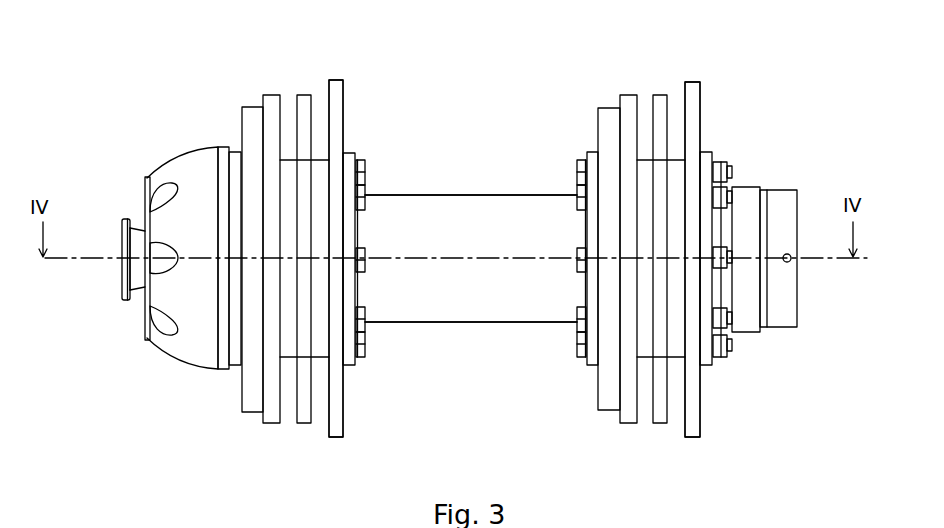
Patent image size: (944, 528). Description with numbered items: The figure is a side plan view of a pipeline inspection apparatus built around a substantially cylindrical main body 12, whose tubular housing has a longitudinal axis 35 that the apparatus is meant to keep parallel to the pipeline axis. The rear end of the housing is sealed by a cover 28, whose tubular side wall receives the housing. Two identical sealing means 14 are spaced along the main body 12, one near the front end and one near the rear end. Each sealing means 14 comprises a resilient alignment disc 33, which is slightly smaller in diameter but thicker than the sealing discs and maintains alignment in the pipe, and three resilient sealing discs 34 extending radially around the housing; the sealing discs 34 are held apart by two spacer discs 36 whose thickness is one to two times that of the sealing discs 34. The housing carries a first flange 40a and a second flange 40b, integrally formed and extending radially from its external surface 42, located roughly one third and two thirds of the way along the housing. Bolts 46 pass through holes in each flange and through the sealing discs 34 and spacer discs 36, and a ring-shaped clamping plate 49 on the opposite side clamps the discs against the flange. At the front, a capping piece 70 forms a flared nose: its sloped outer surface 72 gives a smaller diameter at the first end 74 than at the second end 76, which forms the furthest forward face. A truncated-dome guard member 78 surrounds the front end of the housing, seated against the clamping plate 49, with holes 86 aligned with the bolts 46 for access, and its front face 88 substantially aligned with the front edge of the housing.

The main body 12 is at (449, 332).
The sealing means 14 is at (282, 446).
The cover 28 is at (790, 300).
The alignment disc 33 is at (252, 110).
The sealing discs 34 is at (336, 82).
The longitudinal axis 35 is at (468, 258).
The spacer discs 36 is at (318, 353).
The first flange 40a is at (348, 153).
The second flange 40b is at (590, 365).
The external surface 42 is at (436, 185).
The bolts 46 is at (366, 342).
The clamping plate 49 is at (235, 363).
The capping piece 70 is at (123, 293).
The outer surface 72 is at (140, 217).
The first end 74 is at (146, 290).
The second end 76 is at (143, 205).
The guard member 78 is at (178, 347).
The holes 86 is at (152, 200).
The front face 88 is at (146, 332).